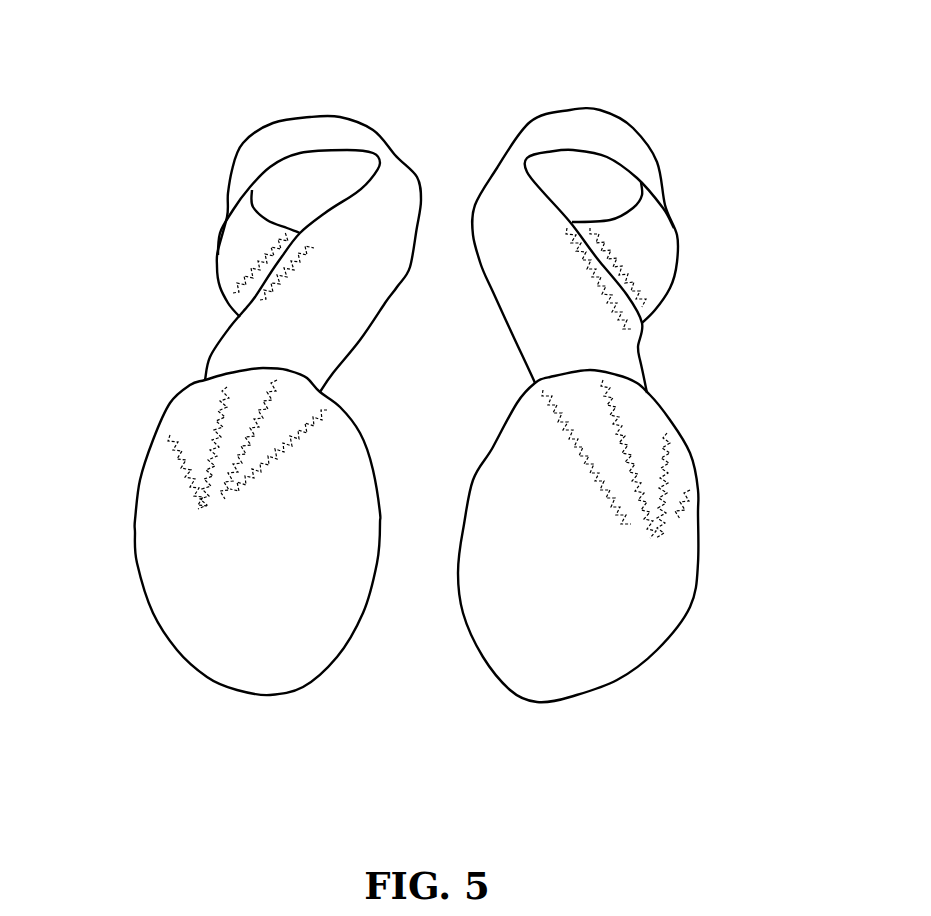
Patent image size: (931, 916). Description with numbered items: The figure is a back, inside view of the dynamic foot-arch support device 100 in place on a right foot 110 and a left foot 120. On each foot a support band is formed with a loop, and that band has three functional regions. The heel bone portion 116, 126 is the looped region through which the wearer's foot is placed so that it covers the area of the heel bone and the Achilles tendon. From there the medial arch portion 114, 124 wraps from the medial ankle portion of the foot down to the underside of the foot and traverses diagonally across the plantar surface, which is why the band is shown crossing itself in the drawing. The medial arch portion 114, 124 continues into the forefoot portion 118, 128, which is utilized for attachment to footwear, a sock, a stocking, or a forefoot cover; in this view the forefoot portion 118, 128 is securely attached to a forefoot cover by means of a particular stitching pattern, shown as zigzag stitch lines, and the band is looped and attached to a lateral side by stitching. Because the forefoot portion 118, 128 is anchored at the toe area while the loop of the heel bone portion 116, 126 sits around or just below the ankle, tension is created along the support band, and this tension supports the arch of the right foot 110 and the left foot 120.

The dynamic foot-arch support device 100 is at (443, 92).
The right foot 110 is at (95, 435).
The medial arch portion 114 is at (385, 303).
The heel bone portion 116 is at (268, 145).
The forefoot portion 118 is at (206, 381).
The left foot 120 is at (759, 425).
The medial arch portion 124 is at (526, 340).
The heel bone portion 126 is at (632, 135).
The forefoot portion 128 is at (650, 395).